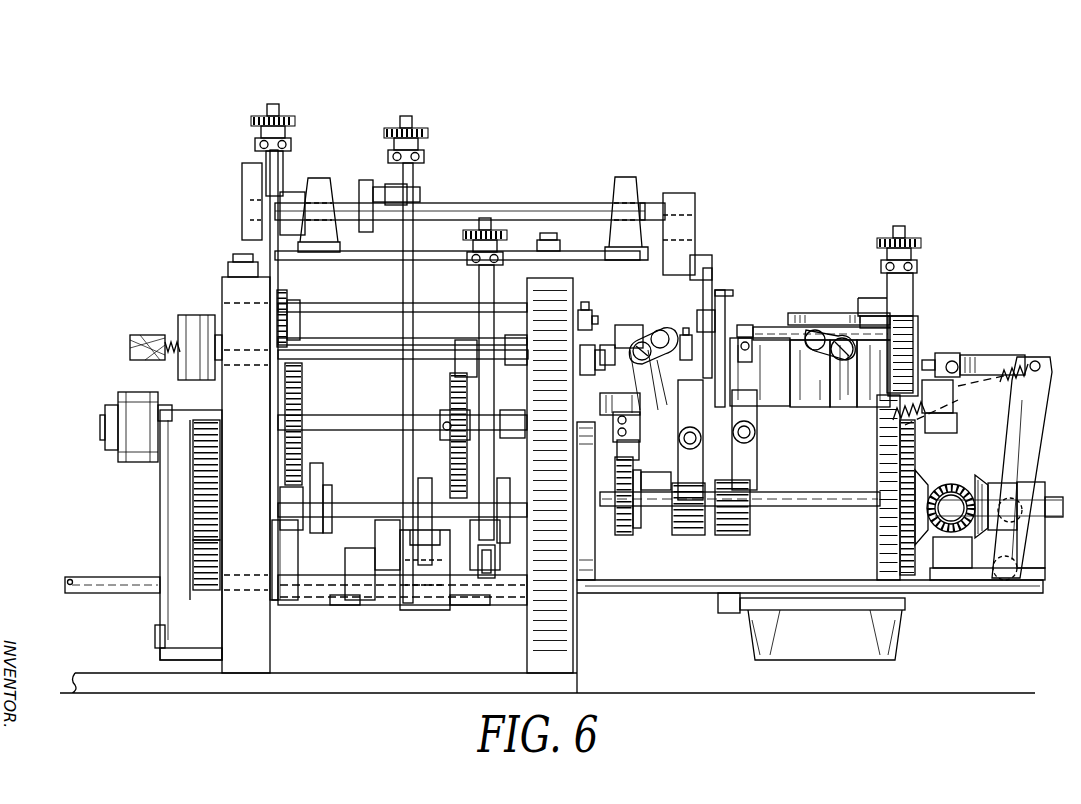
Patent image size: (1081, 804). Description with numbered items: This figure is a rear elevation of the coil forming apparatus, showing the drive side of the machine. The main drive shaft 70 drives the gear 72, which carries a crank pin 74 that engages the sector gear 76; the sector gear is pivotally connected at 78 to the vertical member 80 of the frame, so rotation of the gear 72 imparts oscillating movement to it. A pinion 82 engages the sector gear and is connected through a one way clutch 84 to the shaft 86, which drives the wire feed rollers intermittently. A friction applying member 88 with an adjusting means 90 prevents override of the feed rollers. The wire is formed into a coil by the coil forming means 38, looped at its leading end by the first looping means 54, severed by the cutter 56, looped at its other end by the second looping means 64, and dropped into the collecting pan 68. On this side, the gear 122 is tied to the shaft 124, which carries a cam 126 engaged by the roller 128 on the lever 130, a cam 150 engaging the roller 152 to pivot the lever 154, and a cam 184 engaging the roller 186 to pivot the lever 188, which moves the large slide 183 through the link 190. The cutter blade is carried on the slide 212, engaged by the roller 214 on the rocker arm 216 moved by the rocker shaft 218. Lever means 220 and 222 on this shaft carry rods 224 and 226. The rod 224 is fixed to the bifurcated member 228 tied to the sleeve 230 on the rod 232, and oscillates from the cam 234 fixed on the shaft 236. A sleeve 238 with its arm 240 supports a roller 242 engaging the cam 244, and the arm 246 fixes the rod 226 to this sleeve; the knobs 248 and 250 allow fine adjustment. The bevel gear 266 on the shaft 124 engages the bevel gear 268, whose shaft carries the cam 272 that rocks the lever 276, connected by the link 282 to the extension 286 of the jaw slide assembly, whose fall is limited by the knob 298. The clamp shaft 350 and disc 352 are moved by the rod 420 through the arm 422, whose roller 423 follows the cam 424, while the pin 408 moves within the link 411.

The coil forming means 38 is at (608, 315).
The first looping means 54 is at (688, 320).
The cutter 56 is at (731, 274).
The second looping means 64 is at (752, 319).
The collecting pan 68 is at (760, 628).
The main drive shaft 70 is at (85, 590).
The gear 72 is at (205, 556).
The crank pin 74 is at (185, 522).
The sector gear 76 is at (165, 490).
The pivotal connection 78 is at (155, 640).
The vertical member 80 is at (270, 655).
The pinion 82 is at (162, 405).
The one way clutch 84 is at (118, 402).
The shaft 86 is at (355, 415).
The friction applying member 88 is at (195, 315).
The adjusting means 90 is at (140, 335).
The gear 122 is at (900, 545).
The shaft 124 is at (800, 506).
The cam 126 is at (693, 535).
The roller 128 is at (652, 450).
The lever 130 is at (695, 478).
The cam 150 is at (735, 535).
The roller 152 is at (760, 470).
The lever 154 is at (752, 388).
The large slide 183 is at (622, 328).
The cam 184 is at (618, 472).
The roller 186 is at (617, 458).
The lever 188 is at (608, 405).
The link 190 is at (645, 335).
The slide 212 is at (712, 278).
The roller 214 is at (706, 262).
The rocker arm 216 is at (676, 200).
The rocker shaft 218 is at (495, 203).
The lever means 220 is at (362, 192).
The lever means 222 is at (242, 180).
The rod 224 is at (403, 286).
The rod 226 is at (280, 265).
The bifurcated member 228 is at (436, 610).
The sleeve 230 is at (478, 605).
The rod 232 is at (385, 605).
The cam 234 is at (425, 478).
The shaft 236 is at (362, 503).
The sleeve 238 is at (320, 605).
The arm 240 is at (395, 560).
The roller 242 is at (378, 542).
The cam 244 is at (322, 463).
The arm 246 is at (290, 595).
The knob 248 is at (400, 128).
The knob 250 is at (262, 116).
The bevel gear 266 is at (1030, 485).
The bevel gear 268 is at (950, 467).
The cam 272 is at (984, 474).
The lever 276 is at (1020, 414).
The link 282 is at (1018, 357).
The extension 286 is at (940, 353).
The knob 298 is at (918, 243).
The shaft 350 is at (355, 360).
The disc 352 is at (582, 367).
The pin 408 is at (815, 332).
The link 411 is at (840, 338).
The rod 420 is at (492, 478).
The arm 422 is at (495, 542).
The roller 423 is at (505, 560).
The cam 424 is at (517, 498).